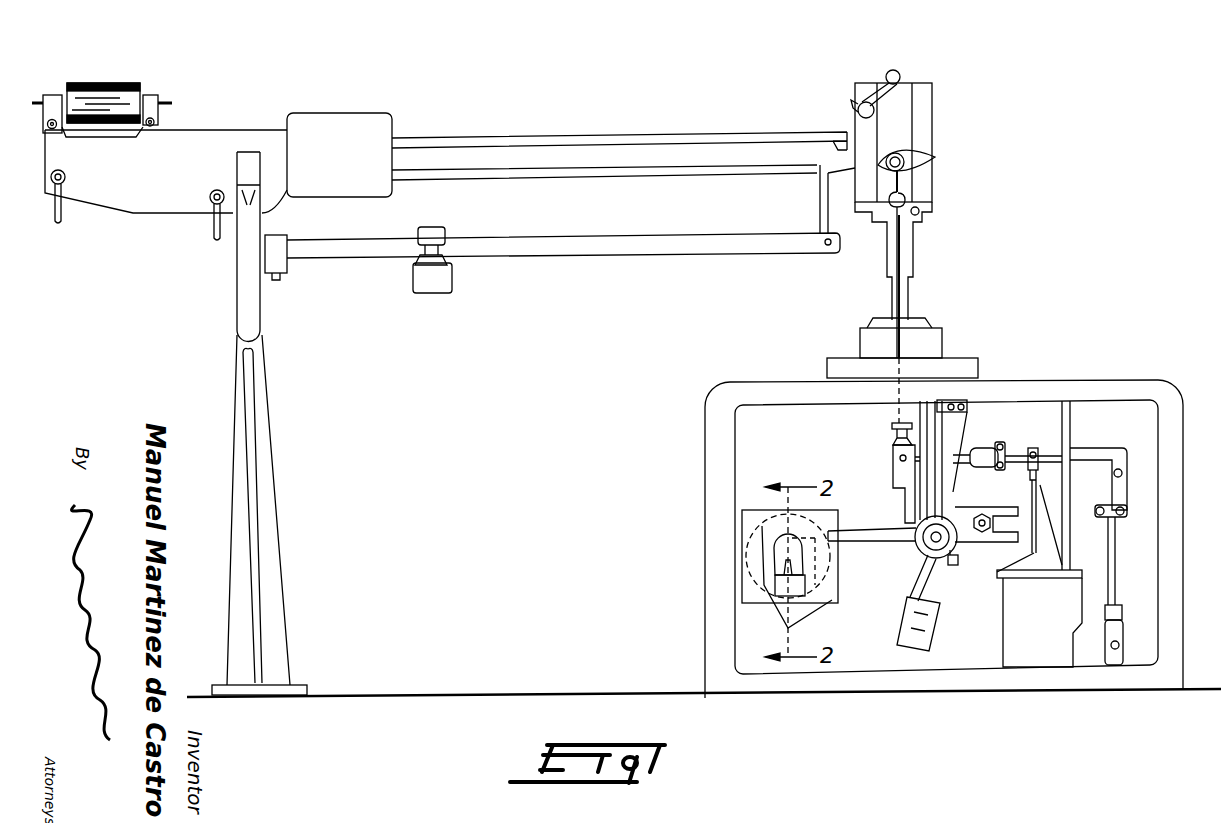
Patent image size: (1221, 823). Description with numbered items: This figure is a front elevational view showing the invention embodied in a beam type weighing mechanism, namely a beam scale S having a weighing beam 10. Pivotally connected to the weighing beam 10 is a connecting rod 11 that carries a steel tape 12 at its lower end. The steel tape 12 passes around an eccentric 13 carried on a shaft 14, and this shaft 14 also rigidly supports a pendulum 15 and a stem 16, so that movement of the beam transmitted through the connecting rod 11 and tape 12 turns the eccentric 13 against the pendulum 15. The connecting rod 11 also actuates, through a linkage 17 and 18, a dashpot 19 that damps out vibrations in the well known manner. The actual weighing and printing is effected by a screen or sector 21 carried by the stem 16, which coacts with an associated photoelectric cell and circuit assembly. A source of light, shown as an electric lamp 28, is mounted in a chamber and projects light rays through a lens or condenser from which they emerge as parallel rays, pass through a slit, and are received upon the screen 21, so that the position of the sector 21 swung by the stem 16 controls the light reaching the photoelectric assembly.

The beam scale S is at (233, 303).
The weighing beam 10 is at (610, 153).
The connecting rod 11 is at (902, 253).
The steel tape 12 is at (905, 506).
The eccentric 13 is at (912, 547).
The shaft 14 is at (919, 576).
The pendulum 15 is at (902, 626).
The stem 16 is at (857, 541).
The linkage 17 is at (987, 455).
The linkage 18 is at (1036, 524).
The dashpot 19 is at (1050, 630).
The screen or sector 21 is at (803, 608).
The electric lamp 28 is at (789, 565).